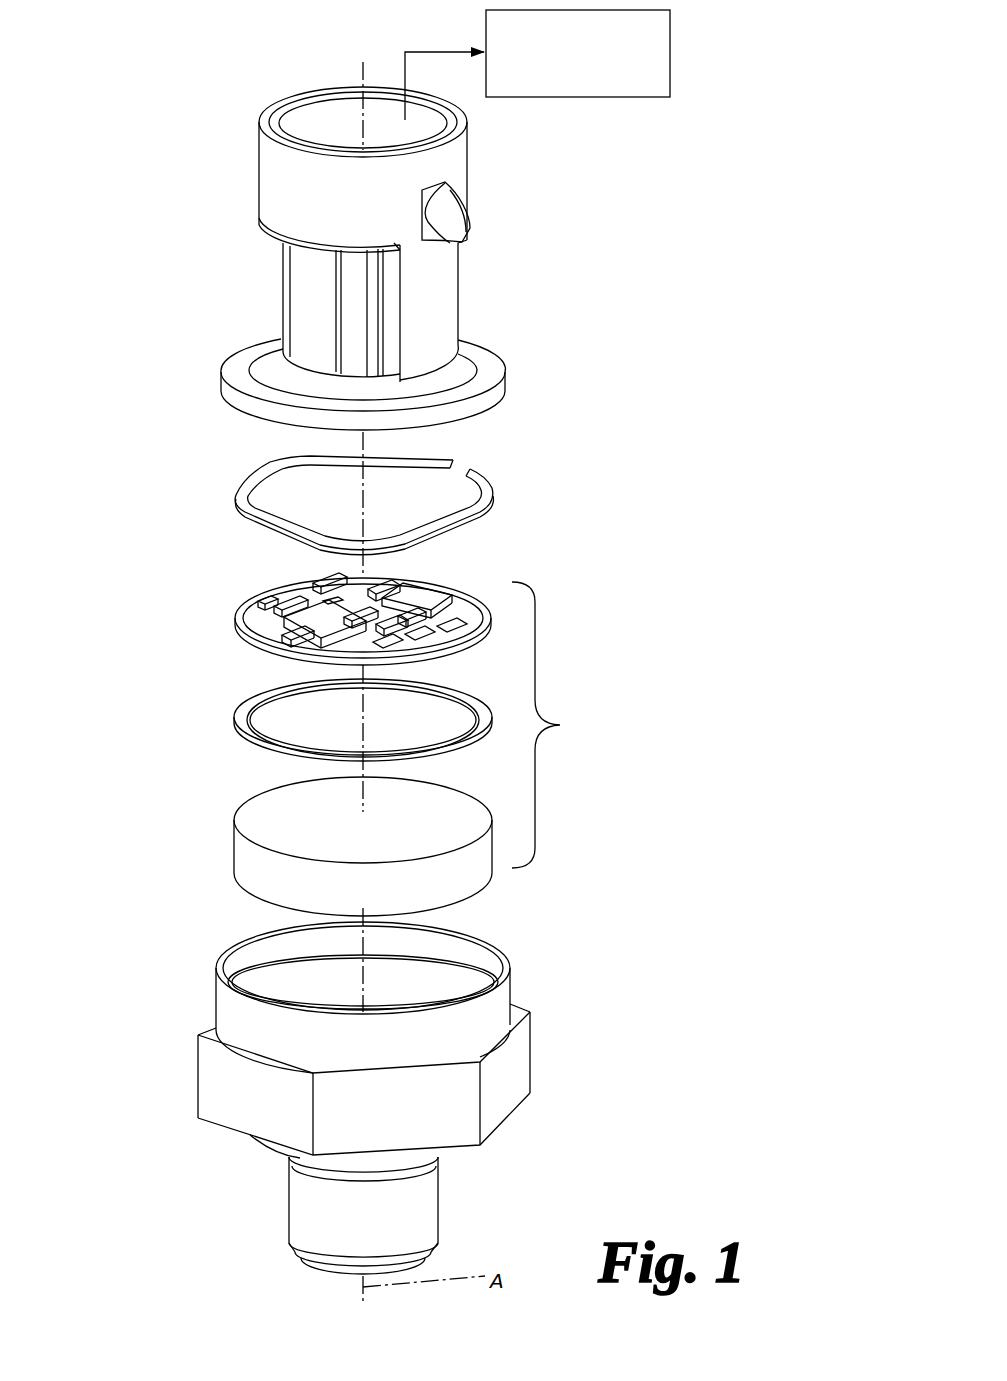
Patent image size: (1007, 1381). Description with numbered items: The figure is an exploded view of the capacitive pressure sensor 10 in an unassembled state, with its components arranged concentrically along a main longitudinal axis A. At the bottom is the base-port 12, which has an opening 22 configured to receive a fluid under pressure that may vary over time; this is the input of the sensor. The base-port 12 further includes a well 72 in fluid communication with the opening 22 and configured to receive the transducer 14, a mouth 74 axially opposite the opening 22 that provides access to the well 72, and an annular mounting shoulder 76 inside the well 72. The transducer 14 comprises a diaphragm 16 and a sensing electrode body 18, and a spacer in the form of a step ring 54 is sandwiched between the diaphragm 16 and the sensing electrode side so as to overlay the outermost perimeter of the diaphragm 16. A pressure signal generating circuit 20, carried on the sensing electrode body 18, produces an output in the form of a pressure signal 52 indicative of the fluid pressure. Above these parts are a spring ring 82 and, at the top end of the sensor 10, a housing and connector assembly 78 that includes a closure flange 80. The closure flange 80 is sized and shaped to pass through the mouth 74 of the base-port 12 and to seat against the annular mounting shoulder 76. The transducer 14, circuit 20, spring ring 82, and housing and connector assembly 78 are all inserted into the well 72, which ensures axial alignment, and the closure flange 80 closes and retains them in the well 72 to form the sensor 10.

The capacitive pressure sensor 10 is at (188, 138).
The base-port 12 is at (341, 1085).
The transducer 14 is at (560, 725).
The diaphragm 16 is at (222, 834).
The sensing electrode body 18 is at (220, 606).
The pressure signal generating circuit 20 is at (270, 584).
The opening 22 is at (318, 1271).
The pressure signal 52 is at (672, 47).
The step ring 54 is at (235, 700).
The well 72 is at (450, 988).
The mouth 74 is at (412, 946).
The annular mounting shoulder 76 is at (240, 980).
The housing and connector assembly 78 is at (223, 267).
The closure flange 80 is at (508, 398).
The spring ring 82 is at (230, 468).